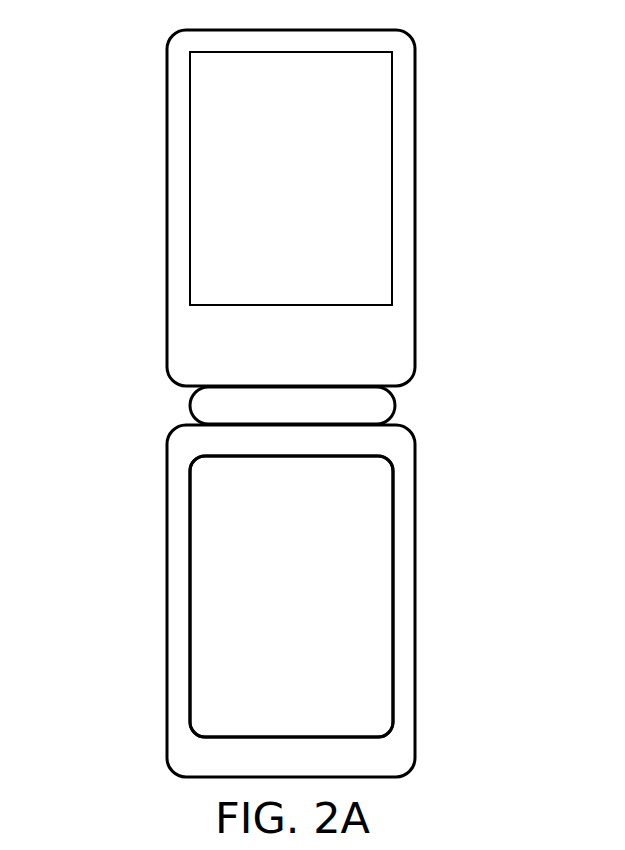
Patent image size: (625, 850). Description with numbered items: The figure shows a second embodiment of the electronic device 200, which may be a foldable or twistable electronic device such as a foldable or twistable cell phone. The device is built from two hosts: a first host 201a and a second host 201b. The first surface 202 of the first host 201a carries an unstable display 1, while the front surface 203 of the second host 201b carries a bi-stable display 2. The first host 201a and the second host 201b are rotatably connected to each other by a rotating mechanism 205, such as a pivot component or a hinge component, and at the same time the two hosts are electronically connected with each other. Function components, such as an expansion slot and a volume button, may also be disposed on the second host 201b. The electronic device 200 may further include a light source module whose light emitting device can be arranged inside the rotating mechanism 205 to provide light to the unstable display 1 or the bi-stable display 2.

The electronic device 200 is at (297, 403).
The first host 201a is at (417, 703).
The second host 201b is at (415, 128).
The first surface 202 is at (398, 620).
The front surface 203 is at (402, 195).
The rotating mechanism 205 is at (380, 404).
The unstable display 1 is at (217, 623).
The bi-stable display 2 is at (213, 178).